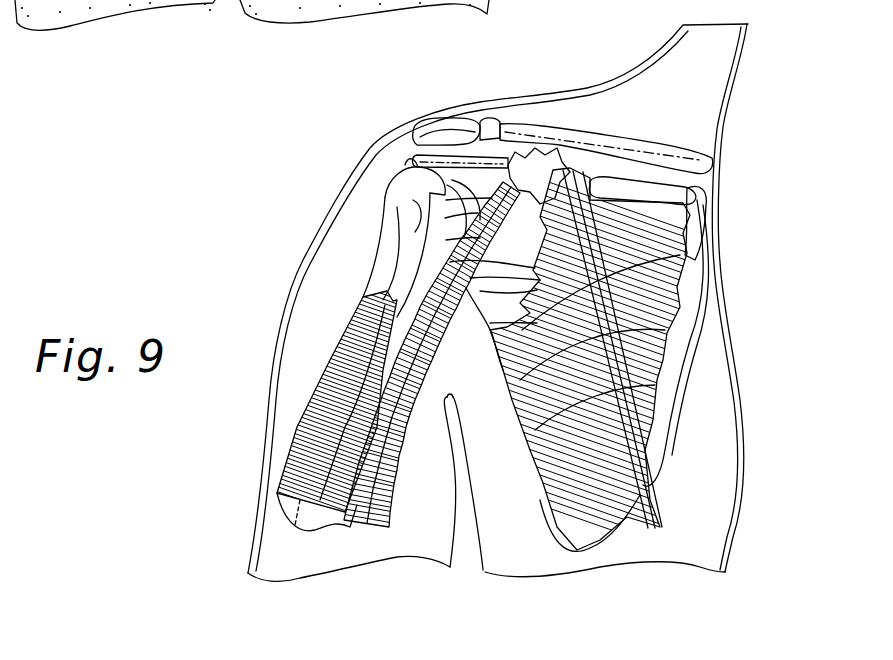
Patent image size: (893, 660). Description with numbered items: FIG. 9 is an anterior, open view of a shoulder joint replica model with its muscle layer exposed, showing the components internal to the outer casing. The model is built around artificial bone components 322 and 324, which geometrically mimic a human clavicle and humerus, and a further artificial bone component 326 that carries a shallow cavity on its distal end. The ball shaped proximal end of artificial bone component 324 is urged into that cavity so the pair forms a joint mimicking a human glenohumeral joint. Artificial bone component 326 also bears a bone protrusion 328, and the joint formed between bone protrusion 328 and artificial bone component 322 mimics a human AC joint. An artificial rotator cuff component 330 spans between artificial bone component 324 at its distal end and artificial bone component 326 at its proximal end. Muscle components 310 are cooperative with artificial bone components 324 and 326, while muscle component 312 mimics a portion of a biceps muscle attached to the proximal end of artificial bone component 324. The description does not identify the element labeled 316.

The muscle components 310 is at (667, 253).
The muscle component 312 is at (312, 448).
The tendon rope 316 is at (393, 288).
The artificial bone component 322 is at (575, 137).
The artificial bone component 324 is at (377, 247).
The artificial bone component 326 is at (687, 360).
The bone protrusion 328 is at (433, 133).
The artificial rotator cuff component 330 is at (488, 157).